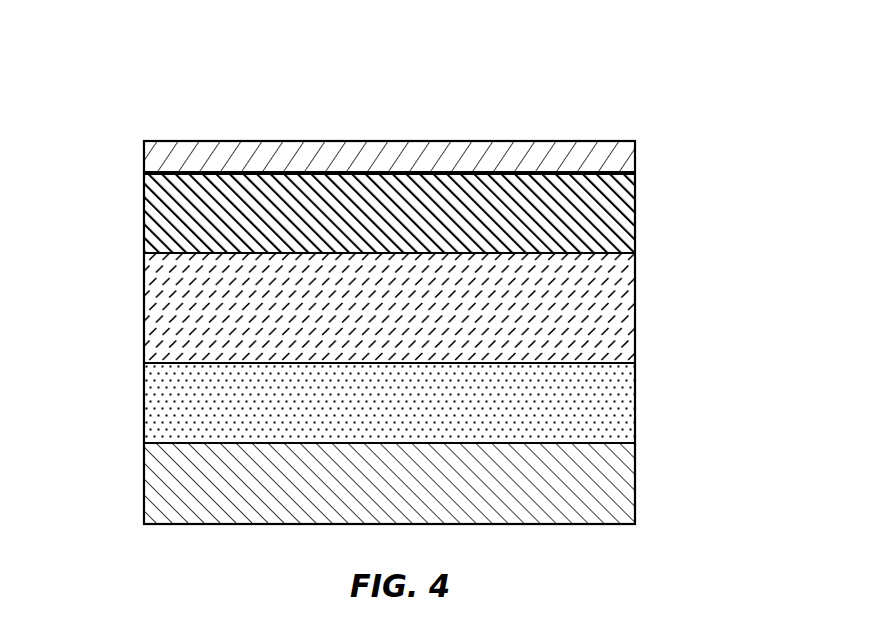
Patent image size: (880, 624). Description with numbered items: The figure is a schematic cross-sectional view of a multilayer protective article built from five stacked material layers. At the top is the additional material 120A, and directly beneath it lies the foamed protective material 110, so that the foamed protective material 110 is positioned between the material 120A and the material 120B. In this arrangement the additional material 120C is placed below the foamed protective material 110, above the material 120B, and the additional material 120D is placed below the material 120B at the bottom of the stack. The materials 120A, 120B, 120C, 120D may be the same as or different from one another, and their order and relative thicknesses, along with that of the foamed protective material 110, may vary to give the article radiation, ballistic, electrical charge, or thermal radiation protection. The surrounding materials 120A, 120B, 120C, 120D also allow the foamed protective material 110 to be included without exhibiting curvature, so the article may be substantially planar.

The additional material 120A is at (620, 158).
The foamed protective material 110 is at (624, 213).
The additional material 120C is at (622, 312).
The additional material 120B is at (622, 404).
The additional material 120D is at (622, 490).